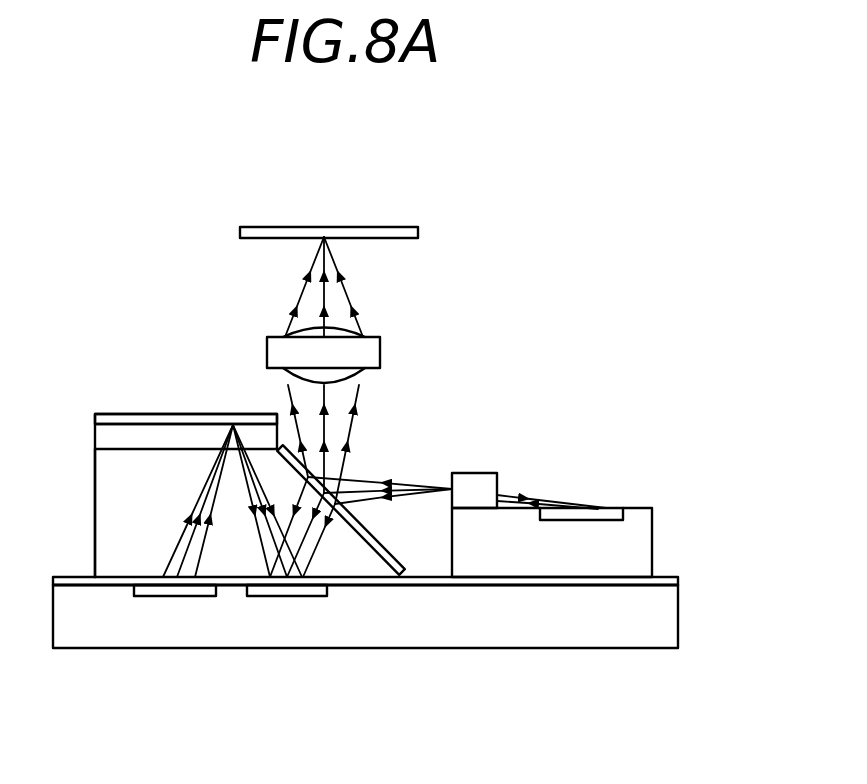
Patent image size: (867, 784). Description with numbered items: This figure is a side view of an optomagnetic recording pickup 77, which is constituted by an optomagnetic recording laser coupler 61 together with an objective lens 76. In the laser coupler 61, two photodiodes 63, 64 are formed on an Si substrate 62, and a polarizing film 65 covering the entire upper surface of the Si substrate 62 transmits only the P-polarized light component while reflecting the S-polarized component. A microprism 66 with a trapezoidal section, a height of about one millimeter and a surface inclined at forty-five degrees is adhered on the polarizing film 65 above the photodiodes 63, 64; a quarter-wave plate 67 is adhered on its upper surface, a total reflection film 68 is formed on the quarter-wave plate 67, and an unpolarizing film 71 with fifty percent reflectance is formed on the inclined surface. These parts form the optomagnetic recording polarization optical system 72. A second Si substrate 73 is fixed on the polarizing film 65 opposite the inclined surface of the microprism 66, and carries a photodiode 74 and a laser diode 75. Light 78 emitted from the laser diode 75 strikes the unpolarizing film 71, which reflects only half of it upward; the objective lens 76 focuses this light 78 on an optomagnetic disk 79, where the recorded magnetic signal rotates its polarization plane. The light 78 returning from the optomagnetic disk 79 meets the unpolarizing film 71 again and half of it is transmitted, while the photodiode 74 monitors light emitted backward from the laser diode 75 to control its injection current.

The optomagnetic recording laser coupler 61 is at (547, 655).
The Si substrate 62 is at (678, 617).
The photodiode 63 is at (298, 600).
The photodiode 64 is at (168, 600).
The polarizing film 65 is at (235, 583).
The microprism 66 is at (132, 465).
The λ/4 plate 67 is at (167, 432).
The total reflection film 68 is at (200, 420).
The unpolarizing film 71 is at (386, 551).
The optomagnetic recording polarization optical system 72 is at (152, 407).
The Si substrate 73 is at (655, 537).
The photodiode 74 is at (607, 522).
The laser diode 75 is at (478, 480).
The objective lens 76 is at (373, 353).
The optomagnetic recording pickup 77 is at (383, 418).
The light 78 is at (360, 472).
The optomagnetic disk 79 is at (376, 230).